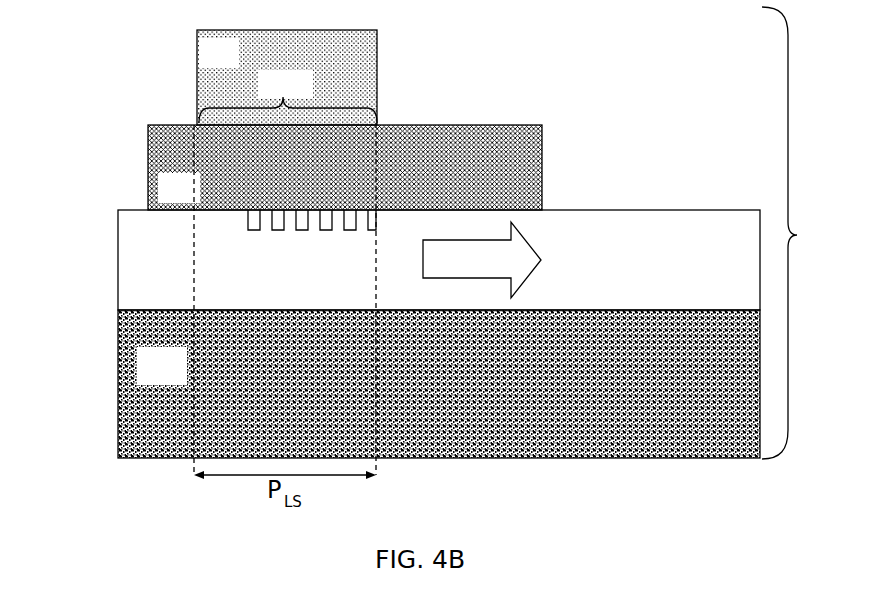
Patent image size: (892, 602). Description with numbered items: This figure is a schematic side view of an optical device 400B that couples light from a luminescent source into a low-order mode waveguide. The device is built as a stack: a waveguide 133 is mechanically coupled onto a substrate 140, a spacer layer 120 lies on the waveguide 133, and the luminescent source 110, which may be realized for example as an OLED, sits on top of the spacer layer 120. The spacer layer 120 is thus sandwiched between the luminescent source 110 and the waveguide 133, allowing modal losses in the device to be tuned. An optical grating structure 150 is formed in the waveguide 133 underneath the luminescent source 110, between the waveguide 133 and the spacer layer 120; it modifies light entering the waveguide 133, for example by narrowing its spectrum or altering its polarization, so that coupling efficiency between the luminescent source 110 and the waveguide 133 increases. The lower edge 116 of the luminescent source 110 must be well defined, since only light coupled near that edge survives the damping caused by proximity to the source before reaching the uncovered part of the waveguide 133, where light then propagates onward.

The luminescent source 110 is at (188, 72).
The spacer layer 120 is at (146, 165).
The waveguide 133 is at (116, 260).
The substrate 140 is at (126, 382).
The lower edge of the luminescent source 116 is at (288, 96).
The optical grating structure 150 is at (377, 224).
The optical device 400B is at (817, 233).